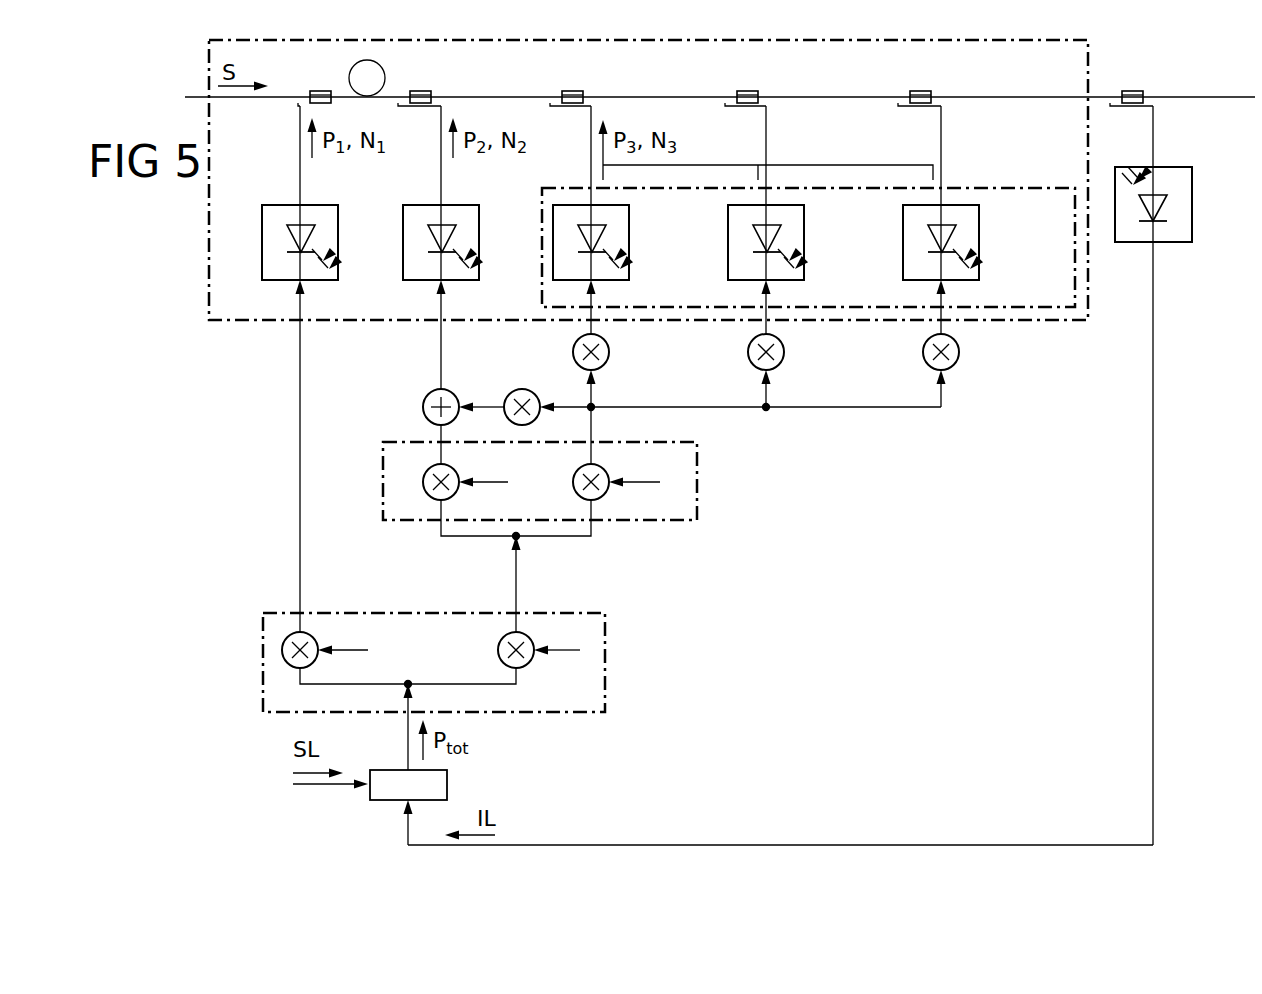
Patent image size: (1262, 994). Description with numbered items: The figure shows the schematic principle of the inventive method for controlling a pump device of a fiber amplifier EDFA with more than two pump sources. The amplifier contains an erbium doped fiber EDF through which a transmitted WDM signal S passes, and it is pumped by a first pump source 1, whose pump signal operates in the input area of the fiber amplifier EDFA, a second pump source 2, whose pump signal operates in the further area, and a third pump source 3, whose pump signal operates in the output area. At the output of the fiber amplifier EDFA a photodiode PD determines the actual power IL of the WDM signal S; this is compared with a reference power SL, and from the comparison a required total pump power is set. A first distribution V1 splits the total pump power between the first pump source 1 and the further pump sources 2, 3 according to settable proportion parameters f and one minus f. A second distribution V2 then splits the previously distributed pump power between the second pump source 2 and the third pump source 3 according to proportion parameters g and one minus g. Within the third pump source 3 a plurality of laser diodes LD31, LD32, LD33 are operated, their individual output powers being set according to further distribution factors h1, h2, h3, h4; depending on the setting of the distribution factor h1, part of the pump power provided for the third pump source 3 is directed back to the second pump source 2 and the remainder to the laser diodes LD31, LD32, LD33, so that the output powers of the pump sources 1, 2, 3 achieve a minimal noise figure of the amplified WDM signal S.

The first pump source 1 is at (262, 240).
The second pump source 2 is at (403, 240).
The third pump source 3 is at (542, 240).
The laser diode LD31 is at (630, 247).
The laser diode LD32 is at (805, 247).
The laser diode LD33 is at (980, 247).
The photodiode PD is at (1192, 210).
The erbium doped fiber EDF is at (385, 78).
The fiber amplifier EDFA is at (209, 300).
The distribution factor h1 is at (522, 389).
The distribution factor h2 is at (609, 352).
The distribution factor h3 is at (784, 352).
The distribution factor h4 is at (959, 352).
The first distribution V1 is at (605, 660).
The second distribution V2 is at (697, 490).